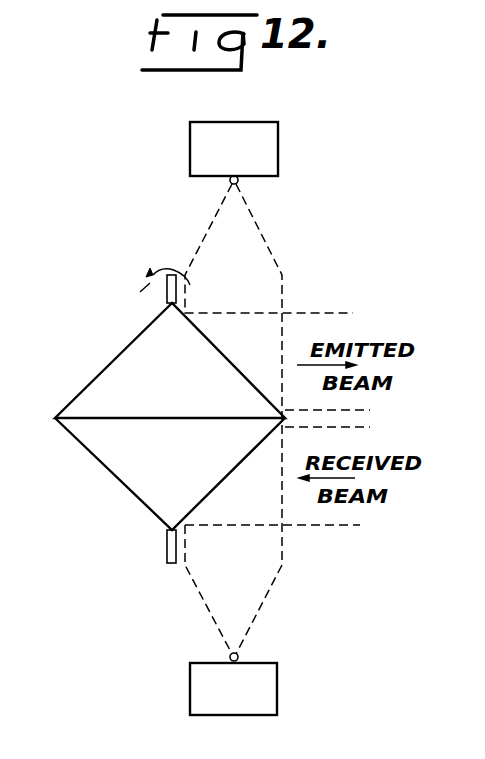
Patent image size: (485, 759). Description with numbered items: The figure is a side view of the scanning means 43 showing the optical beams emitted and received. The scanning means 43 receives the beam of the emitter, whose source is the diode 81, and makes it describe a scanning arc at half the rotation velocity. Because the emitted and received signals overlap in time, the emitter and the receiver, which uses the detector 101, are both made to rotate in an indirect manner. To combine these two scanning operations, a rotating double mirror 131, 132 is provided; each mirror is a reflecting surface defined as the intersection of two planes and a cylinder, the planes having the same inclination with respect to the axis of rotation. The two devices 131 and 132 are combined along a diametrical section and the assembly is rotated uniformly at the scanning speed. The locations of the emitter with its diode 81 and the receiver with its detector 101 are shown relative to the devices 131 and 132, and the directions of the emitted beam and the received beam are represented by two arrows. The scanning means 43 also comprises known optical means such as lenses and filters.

The scanning means 43 is at (170, 397).
The rotating double mirror 131 is at (120, 350).
The rotating double mirror 132 is at (130, 498).
The diode 81 is at (238, 182).
The detector 101 is at (240, 654).